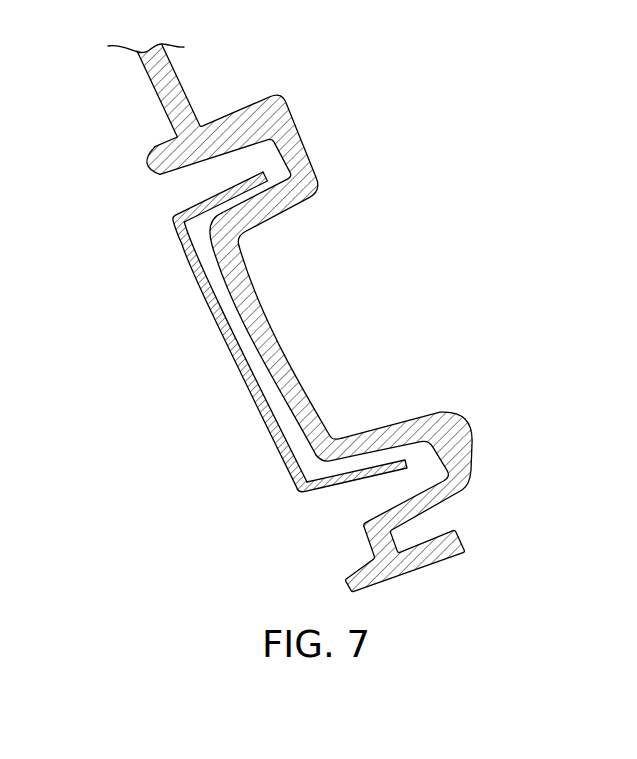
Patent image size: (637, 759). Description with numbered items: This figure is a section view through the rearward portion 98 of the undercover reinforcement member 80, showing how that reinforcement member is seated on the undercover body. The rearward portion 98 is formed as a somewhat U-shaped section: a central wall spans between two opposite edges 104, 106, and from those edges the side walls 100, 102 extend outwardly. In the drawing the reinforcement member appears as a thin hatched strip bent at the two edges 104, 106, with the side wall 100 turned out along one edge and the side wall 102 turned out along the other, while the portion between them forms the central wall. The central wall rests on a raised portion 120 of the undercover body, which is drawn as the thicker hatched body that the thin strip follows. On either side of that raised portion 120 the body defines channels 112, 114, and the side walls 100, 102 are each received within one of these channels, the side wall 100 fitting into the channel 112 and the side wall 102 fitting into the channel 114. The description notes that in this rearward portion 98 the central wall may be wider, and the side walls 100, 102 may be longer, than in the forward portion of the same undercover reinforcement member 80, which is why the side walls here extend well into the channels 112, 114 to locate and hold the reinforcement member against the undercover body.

The undercover reinforcement member 80 is at (266, 451).
The rearward portion 98 is at (186, 364).
The side wall 100 is at (223, 188).
The side wall 102 is at (356, 484).
The edge 104 is at (171, 217).
The edge 106 is at (304, 494).
The channel 112 is at (162, 194).
The channel 114 is at (436, 486).
The raised portion 120 is at (261, 293).